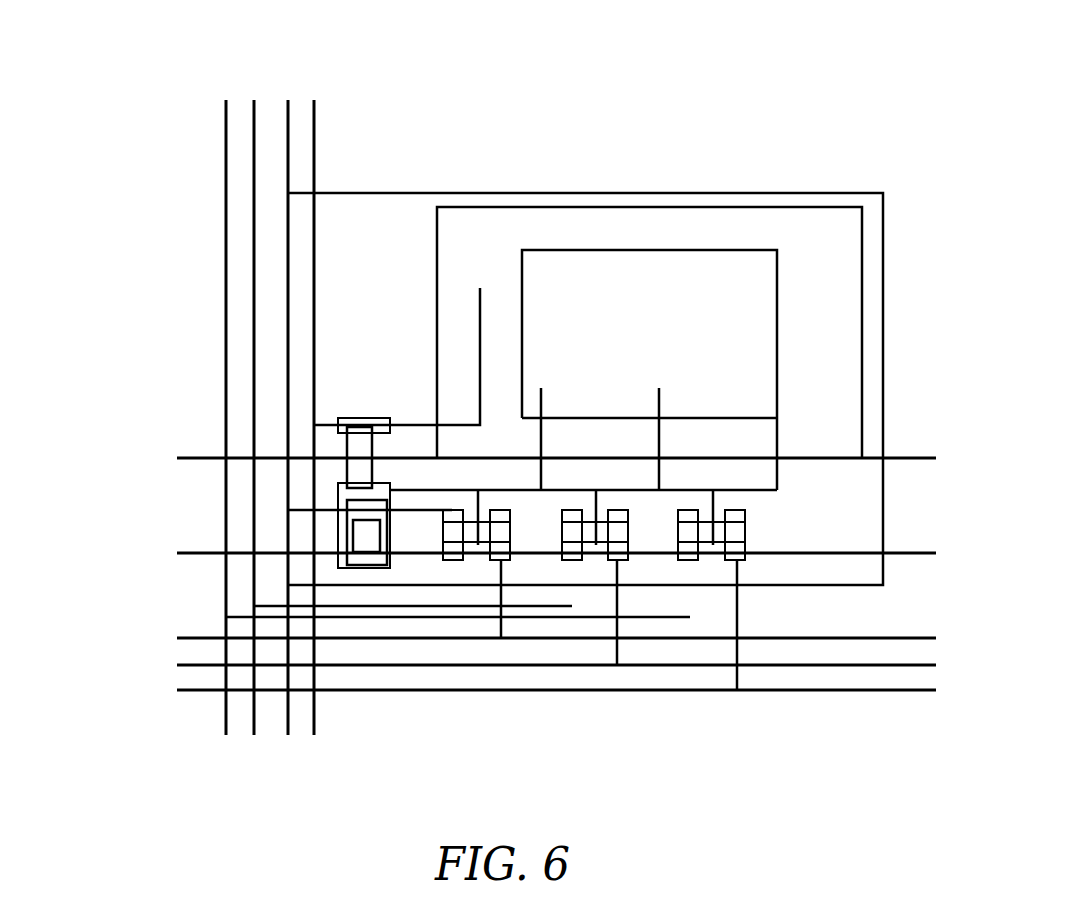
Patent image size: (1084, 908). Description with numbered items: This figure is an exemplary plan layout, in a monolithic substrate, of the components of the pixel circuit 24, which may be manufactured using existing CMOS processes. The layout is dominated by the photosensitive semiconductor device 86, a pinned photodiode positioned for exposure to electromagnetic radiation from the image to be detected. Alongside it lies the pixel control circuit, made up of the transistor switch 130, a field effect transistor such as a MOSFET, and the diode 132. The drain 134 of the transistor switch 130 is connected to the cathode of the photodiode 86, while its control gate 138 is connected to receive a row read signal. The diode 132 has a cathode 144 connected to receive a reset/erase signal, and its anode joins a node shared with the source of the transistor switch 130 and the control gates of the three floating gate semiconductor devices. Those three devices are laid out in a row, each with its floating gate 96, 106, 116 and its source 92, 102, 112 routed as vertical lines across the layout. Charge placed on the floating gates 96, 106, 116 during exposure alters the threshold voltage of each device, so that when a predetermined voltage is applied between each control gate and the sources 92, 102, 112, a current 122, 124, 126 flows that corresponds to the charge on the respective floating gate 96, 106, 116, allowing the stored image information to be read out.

The pixel circuit 24 is at (718, 67).
The photosensitive semiconductor device 86 is at (883, 388).
The source 92 is at (288, 108).
The floating gate 96 is at (477, 542).
The source 102 is at (254, 108).
The floating gate 106 is at (596, 542).
The source 112 is at (226, 128).
The floating gate 116 is at (713, 542).
The current 122 is at (133, 638).
The current 124 is at (133, 665).
The current 126 is at (133, 690).
The transistor switch 130 is at (356, 425).
The diode 132 is at (391, 533).
The drain 134 is at (314, 128).
The control gate 138 is at (194, 458).
The cathode 144 is at (194, 553).